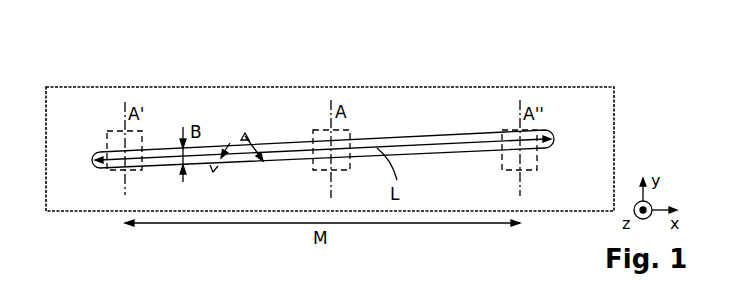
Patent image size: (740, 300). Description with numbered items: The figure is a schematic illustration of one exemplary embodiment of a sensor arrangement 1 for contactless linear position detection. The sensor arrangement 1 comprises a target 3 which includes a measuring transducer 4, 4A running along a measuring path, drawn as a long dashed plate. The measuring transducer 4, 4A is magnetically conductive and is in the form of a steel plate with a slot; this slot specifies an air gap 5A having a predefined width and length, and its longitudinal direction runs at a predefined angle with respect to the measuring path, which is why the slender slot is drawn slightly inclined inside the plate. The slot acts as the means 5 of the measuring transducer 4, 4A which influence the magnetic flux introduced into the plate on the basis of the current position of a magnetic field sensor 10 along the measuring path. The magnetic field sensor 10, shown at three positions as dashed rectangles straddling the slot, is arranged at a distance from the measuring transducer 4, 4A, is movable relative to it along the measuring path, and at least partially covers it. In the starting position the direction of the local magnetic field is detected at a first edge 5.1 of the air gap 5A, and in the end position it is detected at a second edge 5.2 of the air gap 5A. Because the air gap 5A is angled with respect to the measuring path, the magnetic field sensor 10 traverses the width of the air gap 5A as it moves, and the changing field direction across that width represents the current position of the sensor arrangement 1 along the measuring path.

The sensor arrangement 1 is at (96, 68).
The target 3 is at (545, 78).
The measuring transducer 4 is at (350, 132).
The measuring transducer 4A is at (590, 103).
The means for influencing the introduced magnetic flux 5 is at (323, 108).
The air gap 5A is at (423, 133).
The first edge of the air gap 5.1 is at (212, 165).
The second edge of the air gap 5.2 is at (244, 172).
The magnetic field sensor 10 is at (144, 141).